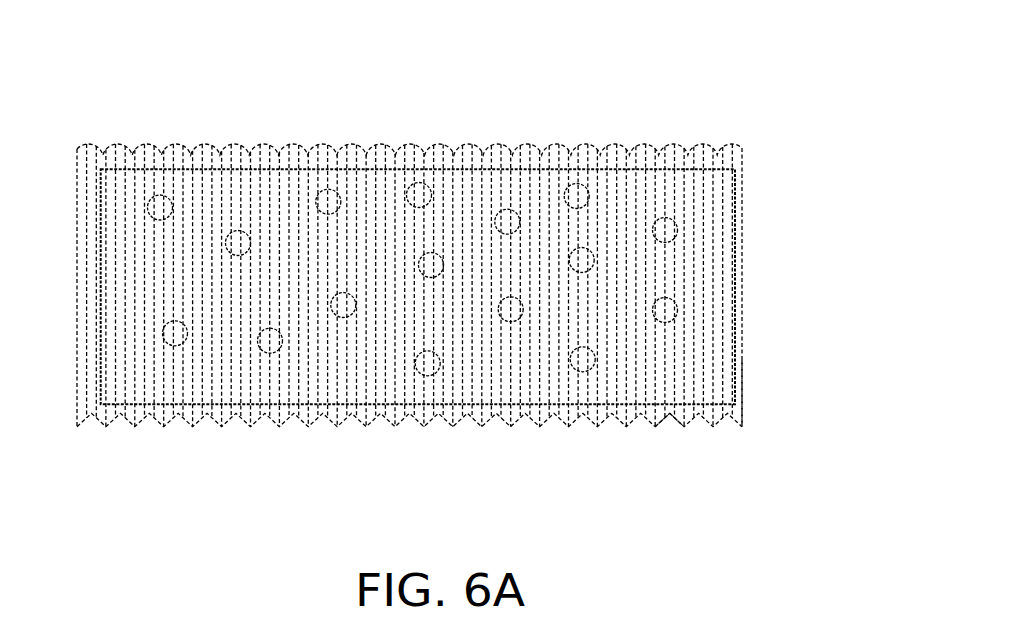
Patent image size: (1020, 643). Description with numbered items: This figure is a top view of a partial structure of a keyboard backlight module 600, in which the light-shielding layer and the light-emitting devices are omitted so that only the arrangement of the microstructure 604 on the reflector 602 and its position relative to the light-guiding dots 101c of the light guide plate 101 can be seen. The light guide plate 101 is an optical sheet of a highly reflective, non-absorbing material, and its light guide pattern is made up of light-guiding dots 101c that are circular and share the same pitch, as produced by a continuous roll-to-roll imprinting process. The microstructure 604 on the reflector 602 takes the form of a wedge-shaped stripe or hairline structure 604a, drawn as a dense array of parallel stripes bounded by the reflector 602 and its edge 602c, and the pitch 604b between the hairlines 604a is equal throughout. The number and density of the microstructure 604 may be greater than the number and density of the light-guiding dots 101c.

The keyboard backlight module 600 is at (57, 46).
The light guide plate 101 is at (720, 227).
The light-guiding dots 101c is at (679, 310).
The reflector 602 is at (744, 285).
The edge of substrate sheet 602c is at (744, 394).
The microstructure 604 is at (733, 499).
The wedge-shaped stripe or hairline structure 604a is at (680, 426).
The pitch 604b is at (668, 425).